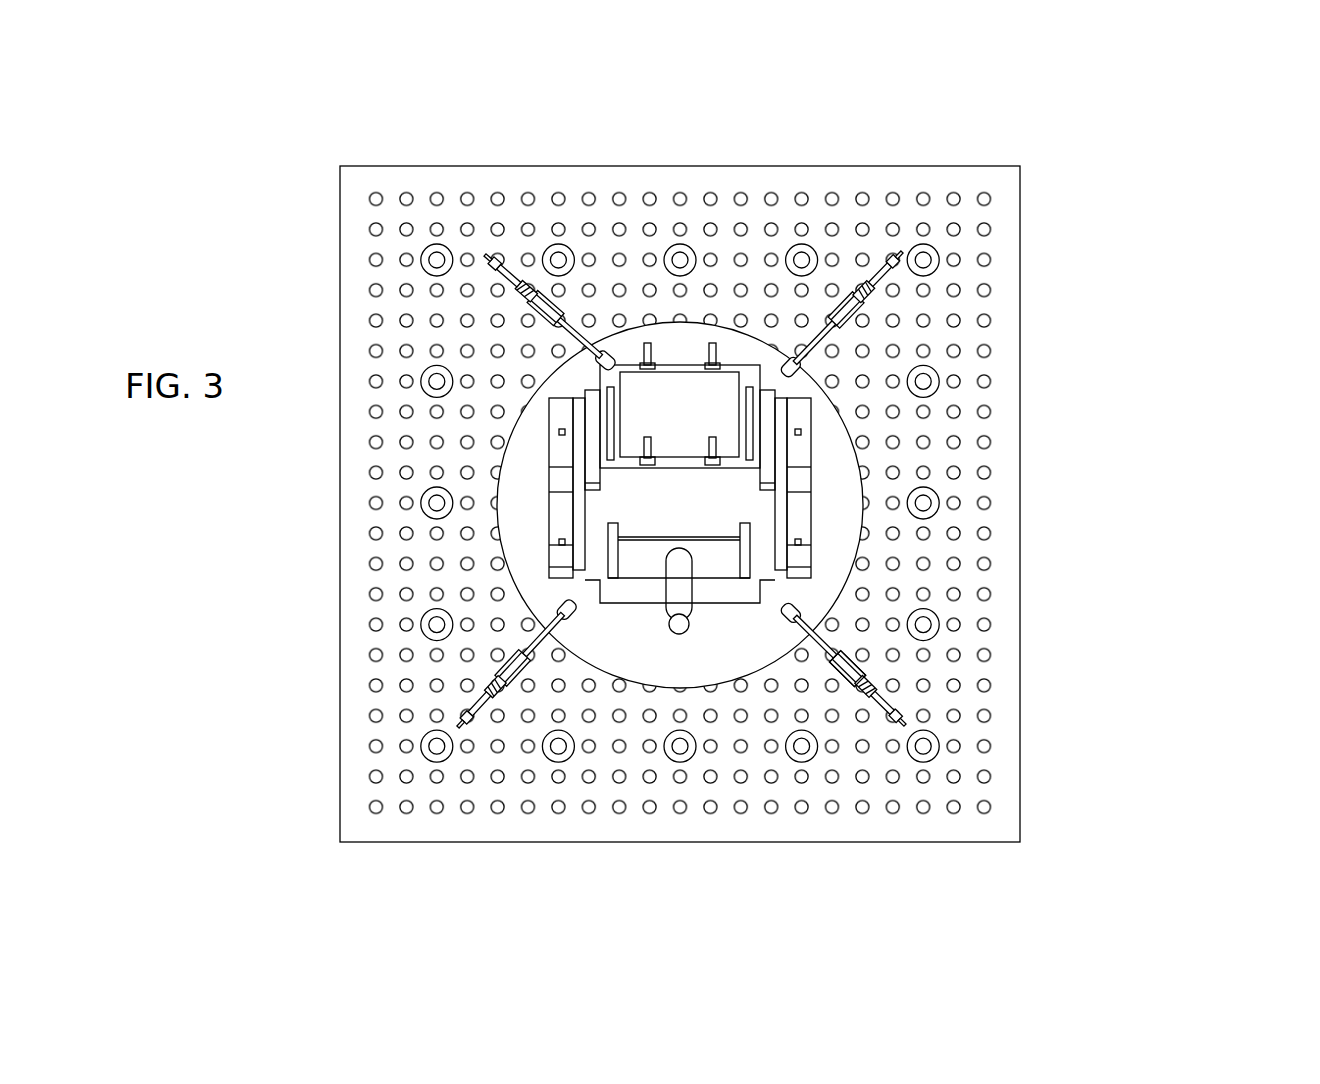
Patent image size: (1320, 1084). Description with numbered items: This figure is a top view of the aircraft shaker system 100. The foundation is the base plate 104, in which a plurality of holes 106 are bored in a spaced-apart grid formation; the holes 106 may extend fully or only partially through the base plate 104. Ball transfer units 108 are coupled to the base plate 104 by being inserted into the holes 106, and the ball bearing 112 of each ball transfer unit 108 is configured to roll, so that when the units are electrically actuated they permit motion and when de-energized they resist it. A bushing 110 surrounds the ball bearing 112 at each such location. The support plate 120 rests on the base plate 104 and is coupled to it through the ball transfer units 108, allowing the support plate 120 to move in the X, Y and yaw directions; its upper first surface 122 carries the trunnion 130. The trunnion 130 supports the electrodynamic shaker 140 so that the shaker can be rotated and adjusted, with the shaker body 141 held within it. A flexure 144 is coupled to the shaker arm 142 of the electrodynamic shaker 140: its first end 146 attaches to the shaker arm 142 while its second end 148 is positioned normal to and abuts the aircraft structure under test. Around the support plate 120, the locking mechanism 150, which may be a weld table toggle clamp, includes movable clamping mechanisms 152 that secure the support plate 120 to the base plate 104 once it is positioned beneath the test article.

The aircraft shaker system 100 is at (1172, 132).
The base plate 104 is at (357, 627).
The holes 106 is at (867, 227).
The ball transfer units 108 is at (672, 232).
The bushing 110 is at (1018, 733).
The ball bearing 112 is at (917, 752).
The support plate 120 is at (543, 588).
The first surface 122 is at (533, 456).
The trunnion 130 is at (803, 450).
The electrodynamic shaker 140 is at (689, 505).
The upper frame 141 is at (712, 415).
The shaker arm 142 is at (745, 537).
The flexure 144 is at (675, 597).
The first end 146 is at (675, 570).
The second end 148 is at (668, 632).
The locking mechanism 150 is at (954, 659).
The clamping mechanism 152 is at (850, 648).